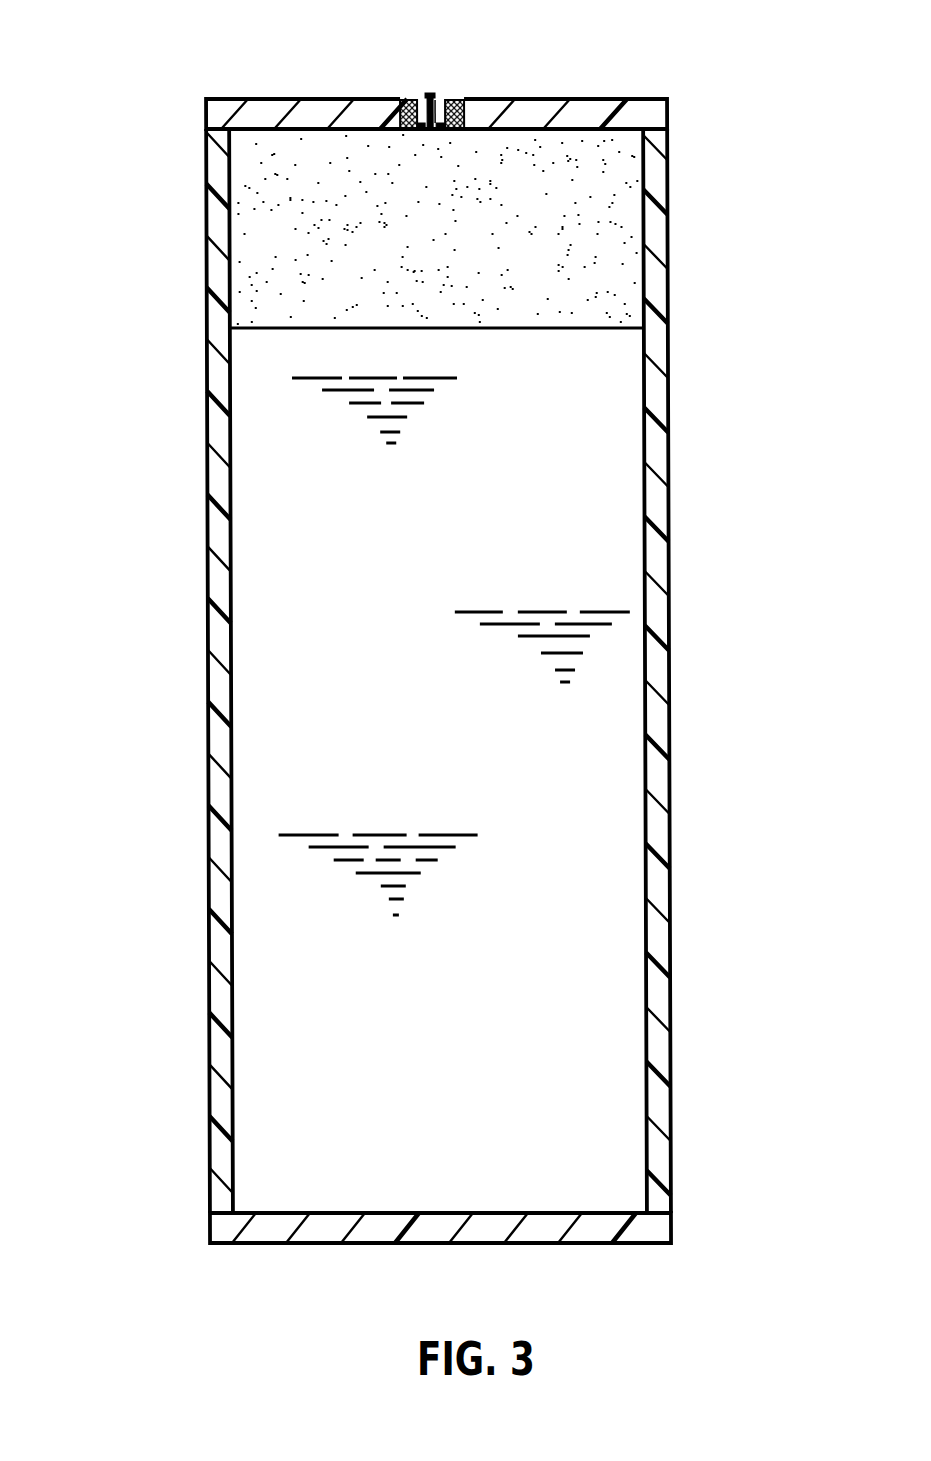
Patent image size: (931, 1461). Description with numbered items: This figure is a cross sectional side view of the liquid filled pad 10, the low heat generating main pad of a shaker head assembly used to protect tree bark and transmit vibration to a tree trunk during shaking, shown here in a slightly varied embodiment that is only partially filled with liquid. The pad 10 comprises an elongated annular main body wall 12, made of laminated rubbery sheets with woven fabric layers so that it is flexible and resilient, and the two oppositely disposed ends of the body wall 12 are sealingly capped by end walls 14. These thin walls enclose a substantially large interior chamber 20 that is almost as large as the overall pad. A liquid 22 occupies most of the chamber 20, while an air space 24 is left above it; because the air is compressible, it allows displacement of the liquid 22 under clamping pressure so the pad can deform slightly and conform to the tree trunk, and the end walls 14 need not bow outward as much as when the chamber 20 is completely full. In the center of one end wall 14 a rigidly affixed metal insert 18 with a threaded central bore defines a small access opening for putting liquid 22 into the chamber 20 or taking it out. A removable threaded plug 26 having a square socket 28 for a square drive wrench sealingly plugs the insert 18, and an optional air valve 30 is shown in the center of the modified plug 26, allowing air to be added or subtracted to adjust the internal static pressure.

The liquid filled pad 10 is at (674, 241).
The main body wall 12 is at (668, 418).
The end walls 14 is at (607, 100).
The metal insert 18 is at (410, 100).
The interior chamber 20 is at (270, 722).
The liquid 22 is at (580, 645).
The air space 24 is at (290, 228).
The threaded plug 26 is at (447, 100).
The square socket 28 is at (441, 98).
The air valve 30 is at (428, 95).